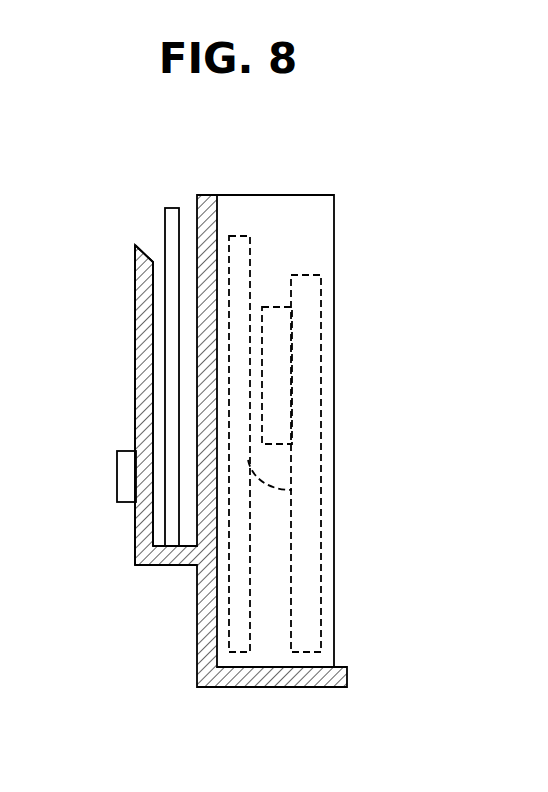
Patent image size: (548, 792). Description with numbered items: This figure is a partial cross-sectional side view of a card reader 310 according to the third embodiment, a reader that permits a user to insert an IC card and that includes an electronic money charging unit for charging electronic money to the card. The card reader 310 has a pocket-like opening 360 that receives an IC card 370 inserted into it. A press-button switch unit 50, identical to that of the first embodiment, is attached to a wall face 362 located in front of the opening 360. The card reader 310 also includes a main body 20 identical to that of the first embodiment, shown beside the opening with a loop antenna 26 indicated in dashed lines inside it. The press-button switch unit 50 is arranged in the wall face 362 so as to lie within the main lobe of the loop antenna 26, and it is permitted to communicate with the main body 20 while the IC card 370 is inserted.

The card reader 310 is at (324, 173).
The opening 360 is at (186, 218).
The wall face 362 is at (135, 353).
The IC card 370 is at (170, 208).
The press-button switch unit 50 is at (117, 473).
The main body 20 is at (275, 195).
The loop antenna 26 is at (250, 627).